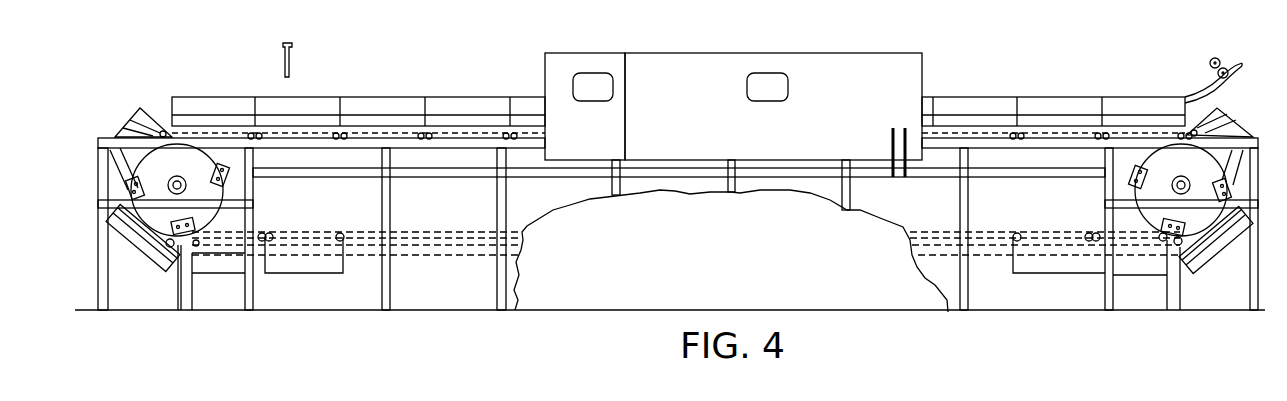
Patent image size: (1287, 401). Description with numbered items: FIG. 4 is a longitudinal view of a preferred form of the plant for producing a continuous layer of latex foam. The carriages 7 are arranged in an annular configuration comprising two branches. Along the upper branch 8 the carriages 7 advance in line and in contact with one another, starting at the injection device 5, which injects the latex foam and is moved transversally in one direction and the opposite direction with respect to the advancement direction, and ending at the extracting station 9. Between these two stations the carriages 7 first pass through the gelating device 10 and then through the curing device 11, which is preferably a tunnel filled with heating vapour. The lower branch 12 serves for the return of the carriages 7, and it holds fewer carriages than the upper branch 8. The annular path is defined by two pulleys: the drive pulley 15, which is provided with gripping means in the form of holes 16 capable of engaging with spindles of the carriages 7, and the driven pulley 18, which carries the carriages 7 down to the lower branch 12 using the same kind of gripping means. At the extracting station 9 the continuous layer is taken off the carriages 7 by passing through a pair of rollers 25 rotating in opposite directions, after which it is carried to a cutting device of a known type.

The injection device 5 is at (290, 62).
The carriages 7 is at (312, 100).
The upper branch 8 is at (418, 76).
The extracting station 9 is at (1187, 105).
The gelating device 10 is at (604, 138).
The curing device 11 is at (799, 138).
The lower branch 12 is at (308, 310).
The drive pulley 15 is at (143, 247).
The holes 16 is at (213, 177).
The driven pulley 18 is at (1214, 180).
The pair of rollers 25 is at (1198, 63).